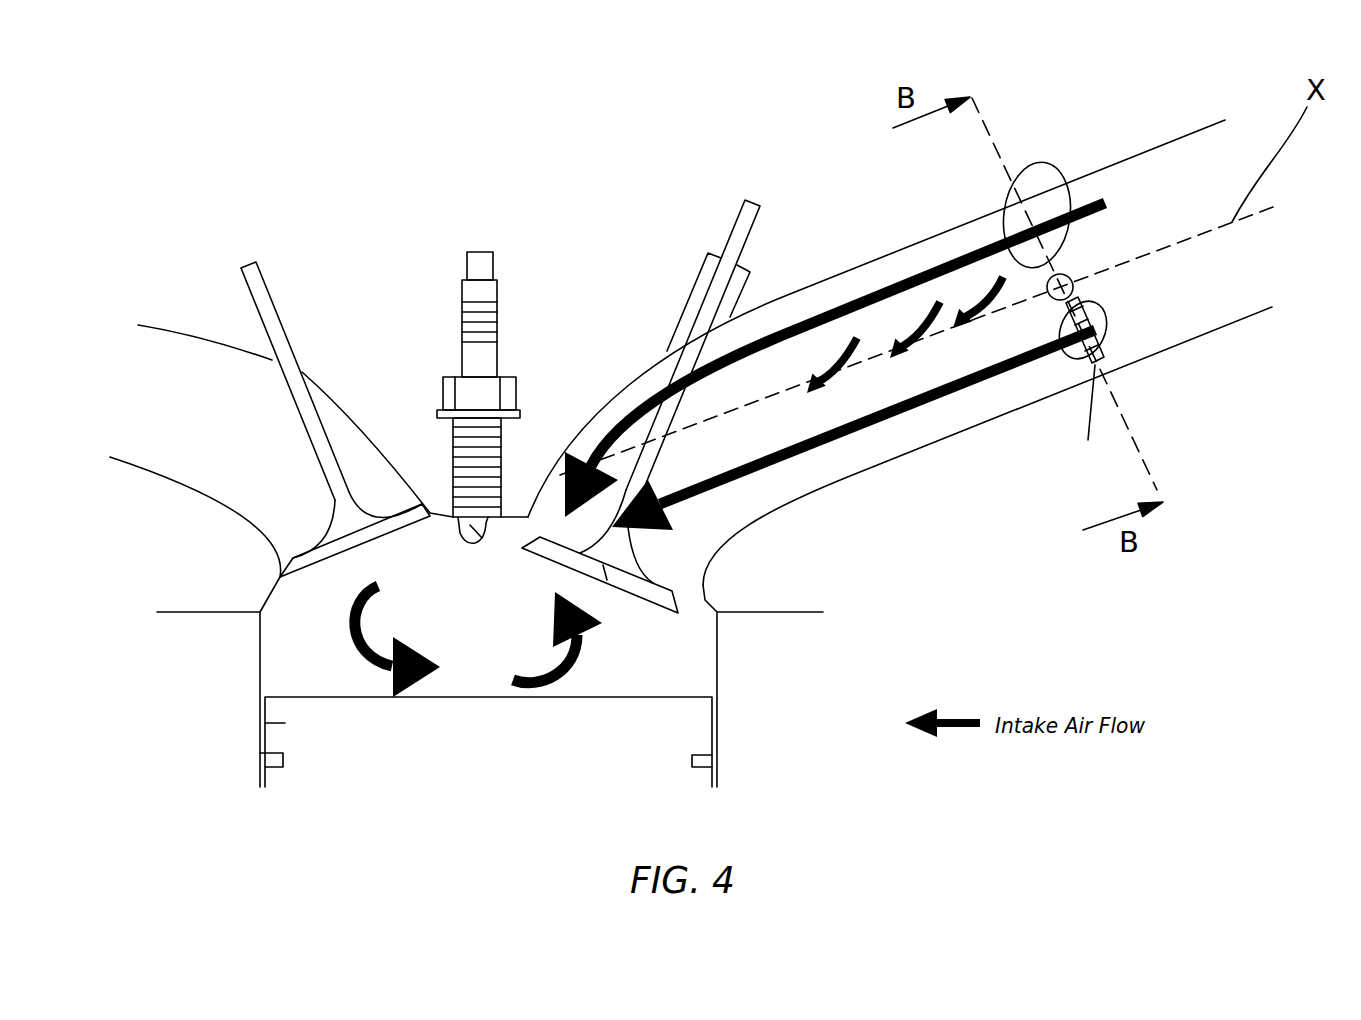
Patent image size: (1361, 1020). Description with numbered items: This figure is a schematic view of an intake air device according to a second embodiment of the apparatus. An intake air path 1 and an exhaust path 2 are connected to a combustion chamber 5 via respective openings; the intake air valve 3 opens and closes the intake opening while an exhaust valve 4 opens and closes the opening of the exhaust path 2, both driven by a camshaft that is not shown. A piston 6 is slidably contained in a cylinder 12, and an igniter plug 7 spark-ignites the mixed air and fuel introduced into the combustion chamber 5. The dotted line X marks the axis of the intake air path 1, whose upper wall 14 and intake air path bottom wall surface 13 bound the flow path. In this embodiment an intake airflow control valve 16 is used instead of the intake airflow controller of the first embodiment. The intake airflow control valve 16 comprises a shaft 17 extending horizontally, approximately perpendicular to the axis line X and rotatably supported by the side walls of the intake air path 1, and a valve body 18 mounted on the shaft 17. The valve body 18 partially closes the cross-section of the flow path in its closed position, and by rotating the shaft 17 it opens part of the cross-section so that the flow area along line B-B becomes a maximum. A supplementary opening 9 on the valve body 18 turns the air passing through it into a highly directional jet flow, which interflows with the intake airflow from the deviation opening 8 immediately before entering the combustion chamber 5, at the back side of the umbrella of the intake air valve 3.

The intake air path 1 is at (900, 312).
The exhaust path 2 is at (220, 377).
The intake air valve 3 is at (735, 223).
The exhaust valve 4 is at (275, 292).
The combustion chamber 5 is at (283, 627).
The piston 6 is at (283, 723).
The igniter plug 7 is at (483, 250).
The deviation opening 8 is at (1040, 158).
The supplementary opening 9 is at (1110, 338).
The cylinder 12 is at (710, 677).
The intake air path bottom wall surface 13 is at (900, 460).
The upper wall of intake port 14 is at (847, 270).
The intake airflow control valve 16 is at (1083, 300).
The shaft 17 is at (1074, 285).
The valve body 18 is at (1090, 374).